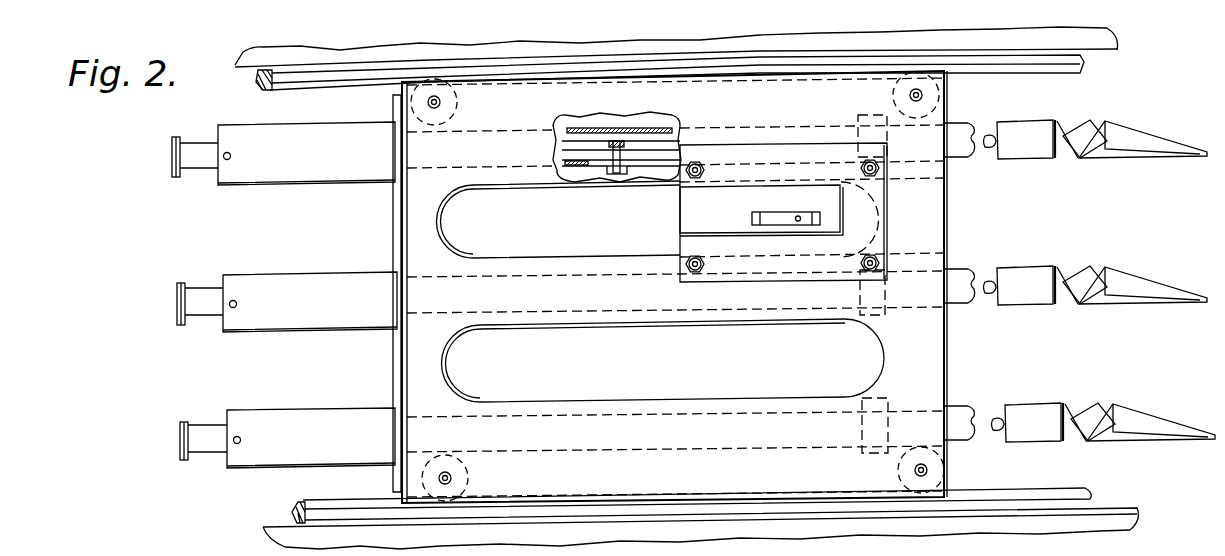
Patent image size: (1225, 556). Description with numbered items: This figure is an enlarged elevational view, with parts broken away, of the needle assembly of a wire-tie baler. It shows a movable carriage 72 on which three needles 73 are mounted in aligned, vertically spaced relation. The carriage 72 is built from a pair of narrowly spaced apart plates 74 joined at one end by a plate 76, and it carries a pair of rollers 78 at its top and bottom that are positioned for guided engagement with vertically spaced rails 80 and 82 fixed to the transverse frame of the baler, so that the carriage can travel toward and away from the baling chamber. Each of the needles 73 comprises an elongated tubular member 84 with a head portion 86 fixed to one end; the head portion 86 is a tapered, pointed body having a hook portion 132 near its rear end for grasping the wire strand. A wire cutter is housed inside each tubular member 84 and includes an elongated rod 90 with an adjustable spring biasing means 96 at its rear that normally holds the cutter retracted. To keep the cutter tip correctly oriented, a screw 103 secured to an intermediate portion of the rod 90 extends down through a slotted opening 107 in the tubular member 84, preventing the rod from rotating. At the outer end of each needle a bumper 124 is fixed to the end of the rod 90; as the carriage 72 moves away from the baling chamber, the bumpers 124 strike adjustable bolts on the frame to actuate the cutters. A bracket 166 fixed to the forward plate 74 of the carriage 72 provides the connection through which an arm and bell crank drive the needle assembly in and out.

The movable carriage 72 is at (605, 306).
The needles 73 is at (318, 169).
The plates 74 is at (432, 397).
The plate 76 is at (393, 229).
The rollers 78 is at (460, 106).
The rail 80 is at (330, 98).
The rail 82 is at (316, 498).
The tubular member 84 is at (962, 122).
The head portion 86 is at (1140, 126).
The rod 90 is at (650, 145).
The adjustable spring biasing means 96 is at (328, 190).
The screw 103 is at (621, 175).
The slotted opening 107 is at (586, 166).
The bumper 124 is at (168, 167).
The hook portion 132 is at (1085, 418).
The bracket 166 is at (768, 212).